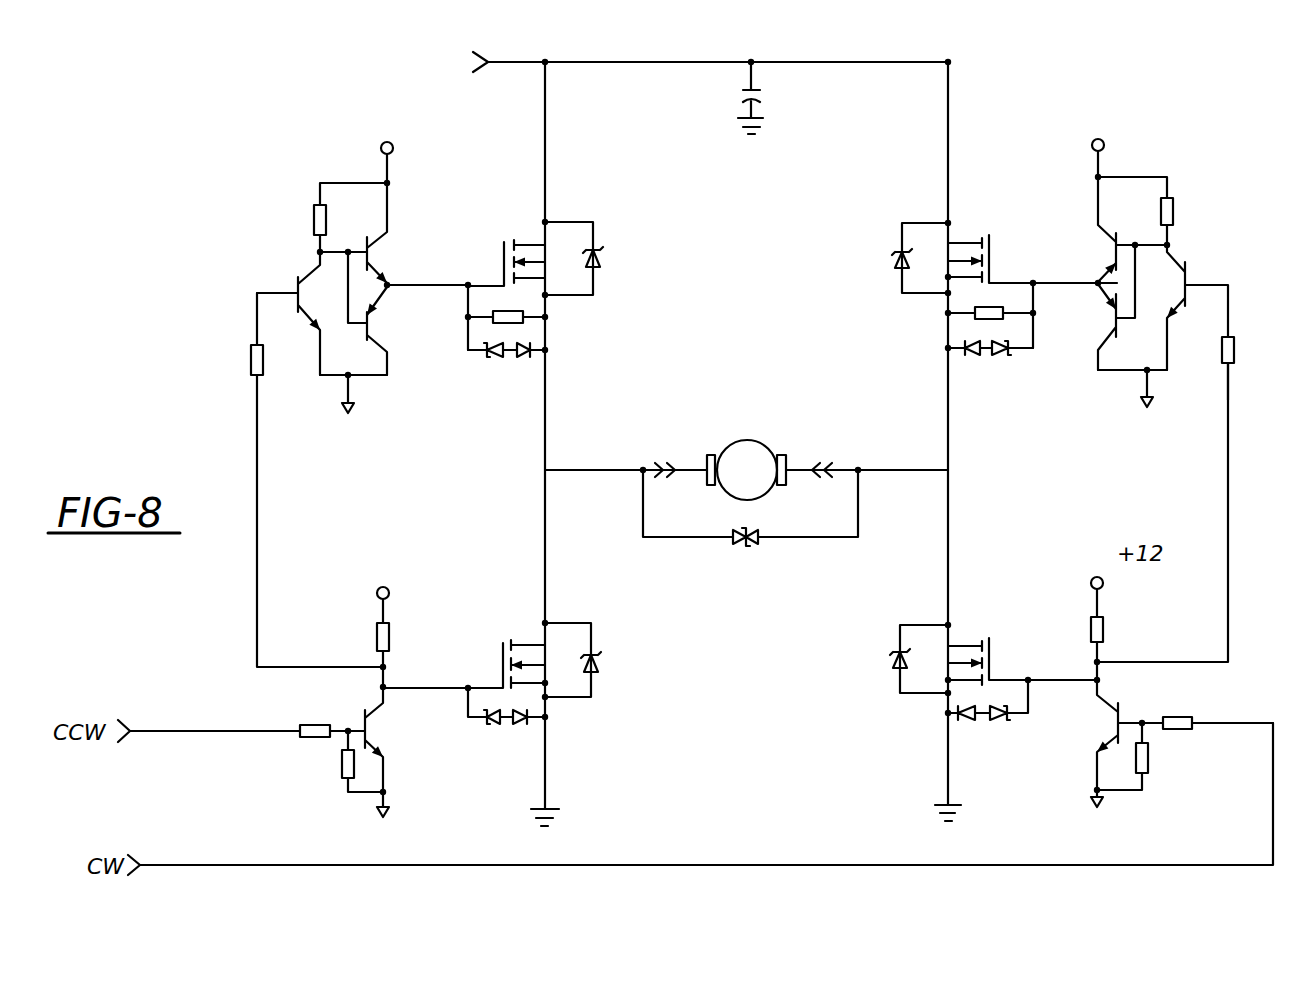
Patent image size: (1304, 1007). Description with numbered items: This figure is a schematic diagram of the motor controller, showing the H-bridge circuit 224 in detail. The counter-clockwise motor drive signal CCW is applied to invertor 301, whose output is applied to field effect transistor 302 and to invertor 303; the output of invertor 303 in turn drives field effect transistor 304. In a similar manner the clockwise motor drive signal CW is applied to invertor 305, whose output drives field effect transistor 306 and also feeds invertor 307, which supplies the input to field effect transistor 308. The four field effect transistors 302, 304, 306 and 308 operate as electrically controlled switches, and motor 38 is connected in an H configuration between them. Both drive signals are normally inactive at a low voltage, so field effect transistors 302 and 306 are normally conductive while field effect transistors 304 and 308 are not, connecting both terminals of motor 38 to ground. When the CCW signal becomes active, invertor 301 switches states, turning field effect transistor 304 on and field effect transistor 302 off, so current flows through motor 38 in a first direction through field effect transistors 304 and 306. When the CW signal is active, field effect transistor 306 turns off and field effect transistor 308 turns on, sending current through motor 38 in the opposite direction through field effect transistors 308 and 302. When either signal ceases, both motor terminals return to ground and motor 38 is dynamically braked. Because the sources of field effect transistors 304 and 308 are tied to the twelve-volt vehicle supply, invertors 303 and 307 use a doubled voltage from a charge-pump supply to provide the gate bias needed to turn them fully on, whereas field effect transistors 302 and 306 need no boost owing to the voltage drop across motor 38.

The motor 38 is at (752, 440).
The H-bridge circuit 224 is at (200, 342).
The invertor 301 is at (358, 644).
The field effect transistor 302 is at (512, 632).
The invertor 303 is at (305, 203).
The field effect transistor 304 is at (512, 226).
The invertor 305 is at (1123, 654).
The field effect transistor 306 is at (993, 663).
The invertor 307 is at (1189, 184).
The field effect transistor 308 is at (966, 231).